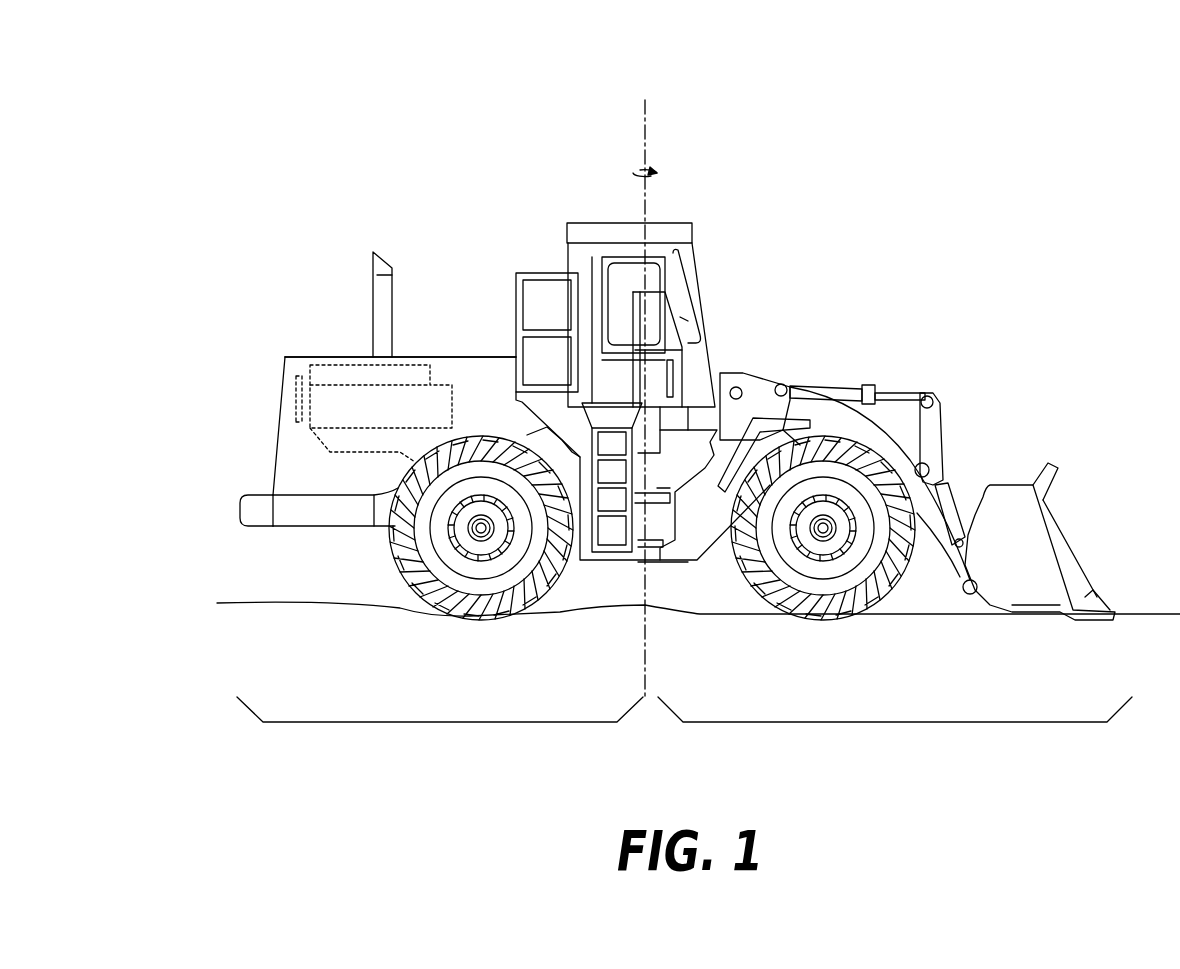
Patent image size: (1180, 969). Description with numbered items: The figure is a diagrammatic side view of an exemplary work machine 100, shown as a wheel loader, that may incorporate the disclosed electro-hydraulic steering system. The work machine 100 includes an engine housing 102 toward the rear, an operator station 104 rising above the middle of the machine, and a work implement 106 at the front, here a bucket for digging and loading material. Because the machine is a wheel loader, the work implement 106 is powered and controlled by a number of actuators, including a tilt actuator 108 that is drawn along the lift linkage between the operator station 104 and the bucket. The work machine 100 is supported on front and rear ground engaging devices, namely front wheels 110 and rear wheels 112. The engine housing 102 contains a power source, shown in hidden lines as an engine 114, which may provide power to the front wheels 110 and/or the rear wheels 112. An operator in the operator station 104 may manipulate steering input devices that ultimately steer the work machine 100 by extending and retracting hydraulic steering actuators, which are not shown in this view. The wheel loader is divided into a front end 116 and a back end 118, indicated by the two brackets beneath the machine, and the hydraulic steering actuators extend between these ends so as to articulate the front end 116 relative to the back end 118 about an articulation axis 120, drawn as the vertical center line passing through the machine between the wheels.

The work machine 100 is at (705, 153).
The engine housing 102 is at (300, 357).
The operator station 104 is at (698, 268).
The work implement 106 is at (1055, 470).
The tilt actuator 108 is at (870, 387).
The front wheels 110 is at (898, 593).
The rear wheels 112 is at (552, 598).
The engine 114 is at (282, 388).
The front end 116 is at (890, 722).
The back end 118 is at (418, 722).
The articulation axis 120 is at (643, 145).